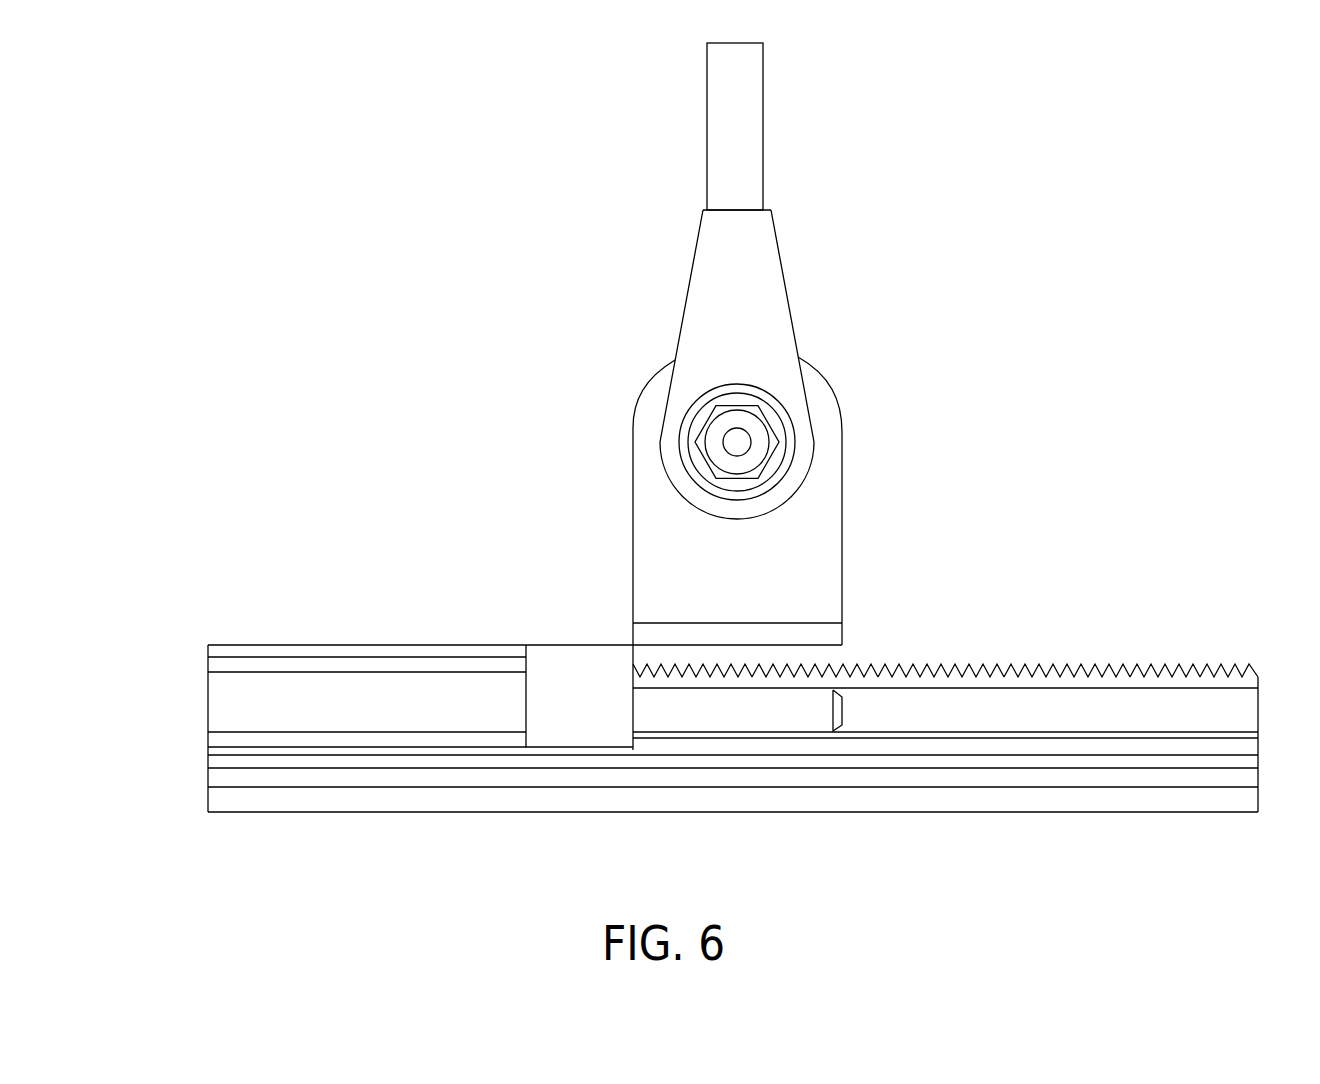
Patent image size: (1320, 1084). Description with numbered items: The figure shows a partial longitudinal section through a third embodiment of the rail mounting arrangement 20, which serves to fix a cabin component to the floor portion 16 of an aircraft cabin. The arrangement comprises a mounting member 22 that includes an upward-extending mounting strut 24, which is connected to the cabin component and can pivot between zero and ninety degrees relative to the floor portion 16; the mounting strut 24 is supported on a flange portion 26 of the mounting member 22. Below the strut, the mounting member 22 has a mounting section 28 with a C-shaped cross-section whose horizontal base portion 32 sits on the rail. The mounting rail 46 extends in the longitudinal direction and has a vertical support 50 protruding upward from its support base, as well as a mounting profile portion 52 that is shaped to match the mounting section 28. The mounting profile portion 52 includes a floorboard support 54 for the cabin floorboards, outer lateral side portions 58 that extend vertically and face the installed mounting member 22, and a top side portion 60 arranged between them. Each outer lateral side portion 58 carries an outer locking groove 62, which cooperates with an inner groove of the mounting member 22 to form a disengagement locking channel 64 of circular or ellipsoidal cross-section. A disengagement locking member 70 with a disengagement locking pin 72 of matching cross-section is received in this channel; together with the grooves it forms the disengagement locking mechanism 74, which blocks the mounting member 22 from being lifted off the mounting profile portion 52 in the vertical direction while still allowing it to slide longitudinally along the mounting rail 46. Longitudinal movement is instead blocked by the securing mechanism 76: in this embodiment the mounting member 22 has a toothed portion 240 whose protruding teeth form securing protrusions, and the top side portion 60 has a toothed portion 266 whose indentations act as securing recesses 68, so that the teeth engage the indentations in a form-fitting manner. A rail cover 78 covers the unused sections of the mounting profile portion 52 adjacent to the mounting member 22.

The floor portion 16 is at (521, 95).
The rail mounting arrangement 20 is at (607, 135).
The mounting member 22 is at (568, 410).
The mounting strut 24 is at (733, 132).
The flange portion 26 is at (828, 445).
The mounting section 28 is at (866, 609).
The base portion 32 is at (660, 632).
The mounting rail 46 is at (312, 800).
The vertical support 50 is at (716, 798).
The mounting profile portion 52 is at (1085, 620).
The floorboard support 54 is at (217, 762).
The outer lateral side portion 58 is at (917, 680).
The top side portion 60 is at (977, 608).
The outer locking groove 62 is at (1023, 712).
The disengagement locking channel 64 is at (787, 710).
The securing recess 68 is at (1134, 640).
The disengagement locking member 70 is at (573, 670).
The disengagement locking pin 72 is at (687, 707).
The disengagement locking mechanism 74 is at (475, 488).
The securing mechanism 76 is at (852, 573).
The rail cover 78 is at (237, 693).
The toothed portion 240 is at (744, 684).
The toothed portion 266 is at (1204, 640).